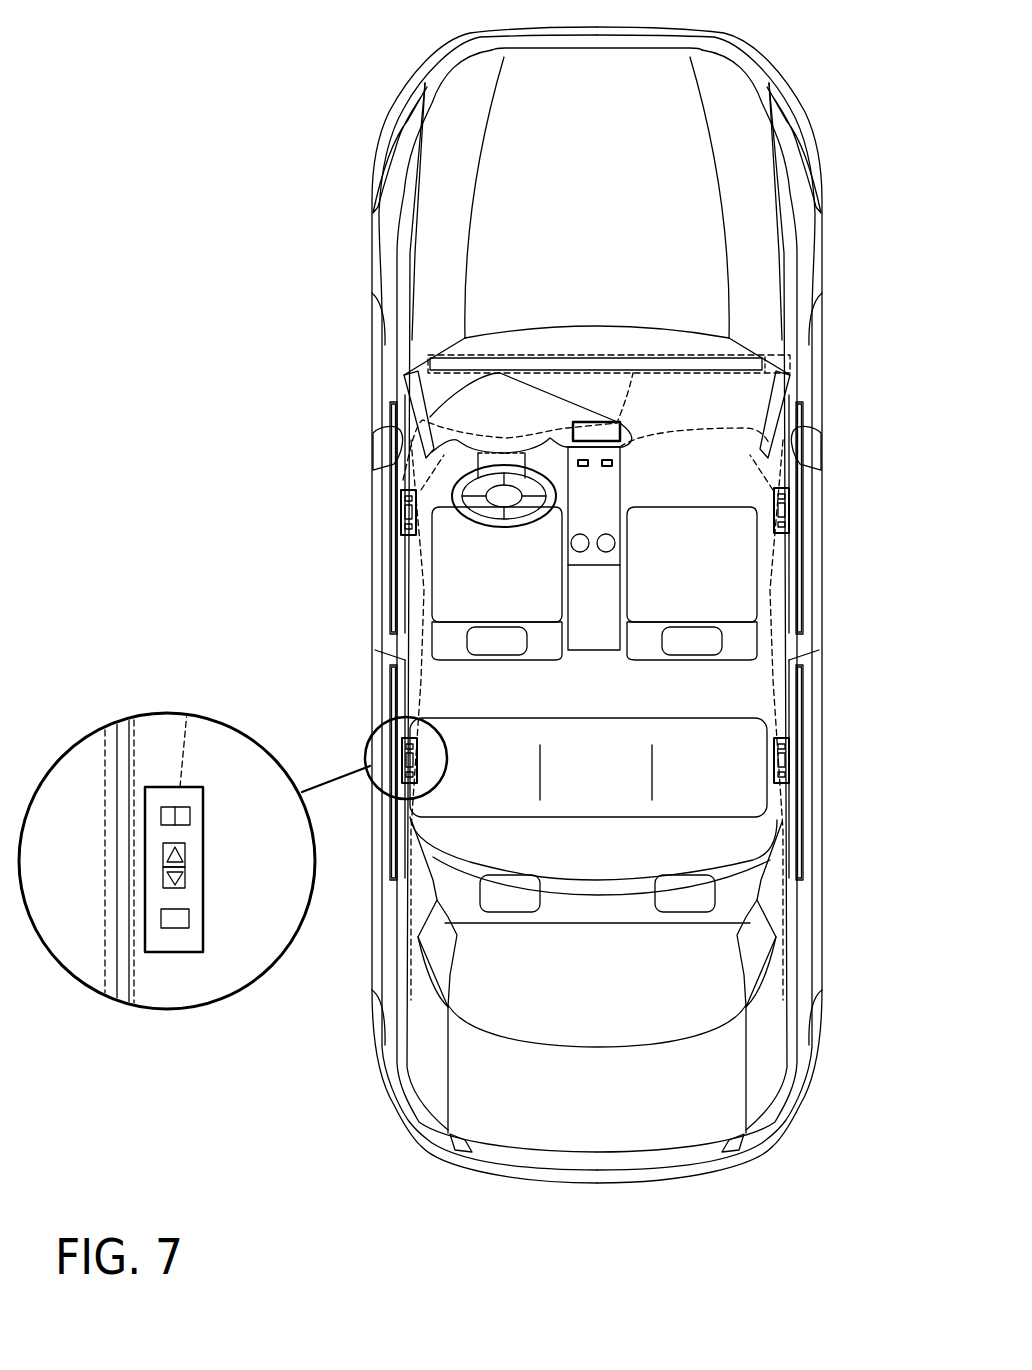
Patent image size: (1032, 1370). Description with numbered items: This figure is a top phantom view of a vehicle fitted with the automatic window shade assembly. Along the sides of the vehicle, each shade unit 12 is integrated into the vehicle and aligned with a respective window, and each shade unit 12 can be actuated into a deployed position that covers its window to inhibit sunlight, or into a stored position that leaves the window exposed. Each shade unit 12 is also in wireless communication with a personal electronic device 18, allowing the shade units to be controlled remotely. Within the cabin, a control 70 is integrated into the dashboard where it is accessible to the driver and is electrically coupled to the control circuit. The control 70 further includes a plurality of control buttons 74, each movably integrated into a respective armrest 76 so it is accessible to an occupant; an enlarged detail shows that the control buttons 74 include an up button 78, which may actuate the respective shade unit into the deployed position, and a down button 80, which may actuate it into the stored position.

The shade unit 12 is at (392, 572).
The personal electronic device 18 is at (822, 1165).
The control 70 is at (650, 410).
The control button 74 is at (398, 510).
The armrest 76 is at (418, 518).
The up button 78 is at (182, 853).
The down button 80 is at (182, 882).